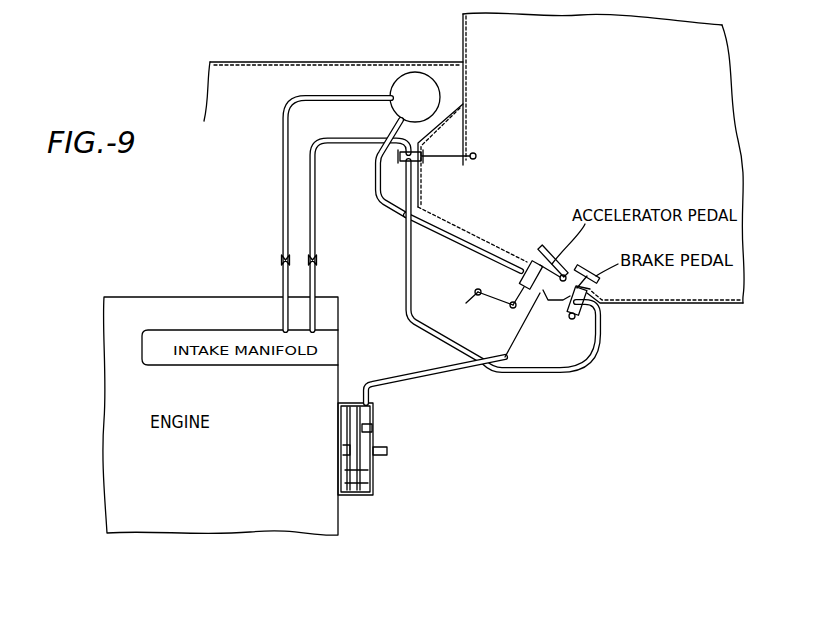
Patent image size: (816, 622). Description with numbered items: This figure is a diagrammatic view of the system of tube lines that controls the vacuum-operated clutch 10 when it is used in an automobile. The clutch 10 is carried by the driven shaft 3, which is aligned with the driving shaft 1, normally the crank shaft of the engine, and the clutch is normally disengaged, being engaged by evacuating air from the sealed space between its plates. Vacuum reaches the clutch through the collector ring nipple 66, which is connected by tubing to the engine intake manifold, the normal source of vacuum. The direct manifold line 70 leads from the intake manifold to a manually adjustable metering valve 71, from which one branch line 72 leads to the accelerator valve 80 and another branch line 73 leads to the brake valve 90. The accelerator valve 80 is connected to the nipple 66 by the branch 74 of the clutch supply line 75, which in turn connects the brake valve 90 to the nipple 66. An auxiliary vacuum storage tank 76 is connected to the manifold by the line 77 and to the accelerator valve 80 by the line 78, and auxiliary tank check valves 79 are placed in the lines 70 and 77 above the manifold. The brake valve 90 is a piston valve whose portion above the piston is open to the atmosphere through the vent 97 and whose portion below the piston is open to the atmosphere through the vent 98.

The driving shaft 1 is at (337, 456).
The driven shaft 3 is at (387, 451).
The clutch 10 is at (373, 478).
The collector ring nipple 66 is at (372, 430).
The direct manifold line 70 is at (316, 198).
The metering valve 71 is at (423, 164).
The branch line 72 is at (457, 229).
The branch line 73 is at (440, 336).
The branch 74 is at (517, 334).
The clutch supply line 75 is at (466, 365).
The auxiliary vacuum storage tank 76 is at (390, 89).
The line 77 is at (283, 166).
The line 78 is at (398, 222).
The auxiliary tank check valves 79 is at (282, 262).
The accelerator valve 80 is at (521, 281).
The brake valve 90 is at (563, 306).
The vent 97 is at (590, 289).
The vent 98 is at (575, 318).